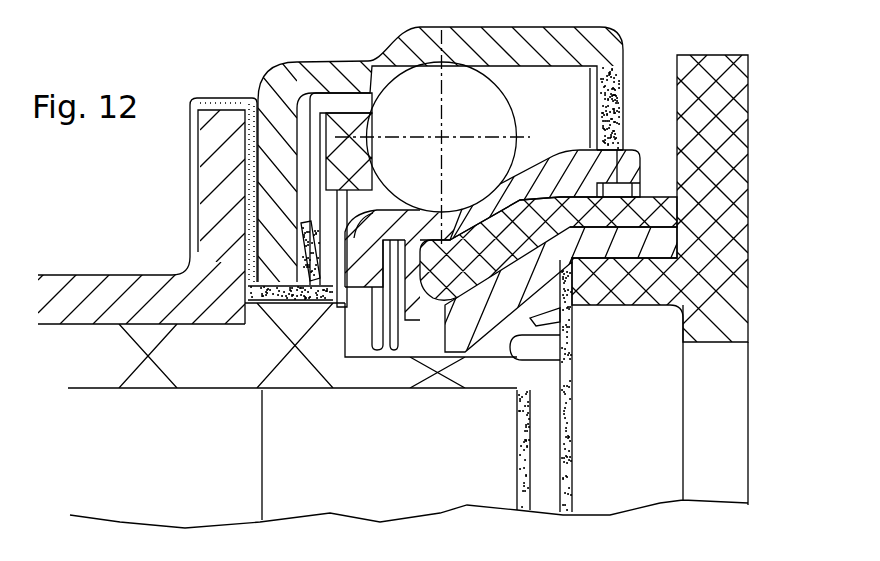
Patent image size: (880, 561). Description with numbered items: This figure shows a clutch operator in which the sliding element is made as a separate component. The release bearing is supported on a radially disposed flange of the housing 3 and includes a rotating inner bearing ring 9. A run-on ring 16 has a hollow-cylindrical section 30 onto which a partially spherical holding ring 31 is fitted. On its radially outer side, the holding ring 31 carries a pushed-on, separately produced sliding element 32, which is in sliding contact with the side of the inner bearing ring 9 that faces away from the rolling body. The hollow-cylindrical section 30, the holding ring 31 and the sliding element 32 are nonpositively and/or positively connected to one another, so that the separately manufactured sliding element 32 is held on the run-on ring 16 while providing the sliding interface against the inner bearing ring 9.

The housing 3 is at (210, 357).
The inner bearing ring 9 is at (627, 160).
The run-on ring 16 is at (728, 418).
The hollow-cylindrical section 30 is at (628, 290).
The holding ring 31 is at (655, 243).
The sliding element 32 is at (667, 213).